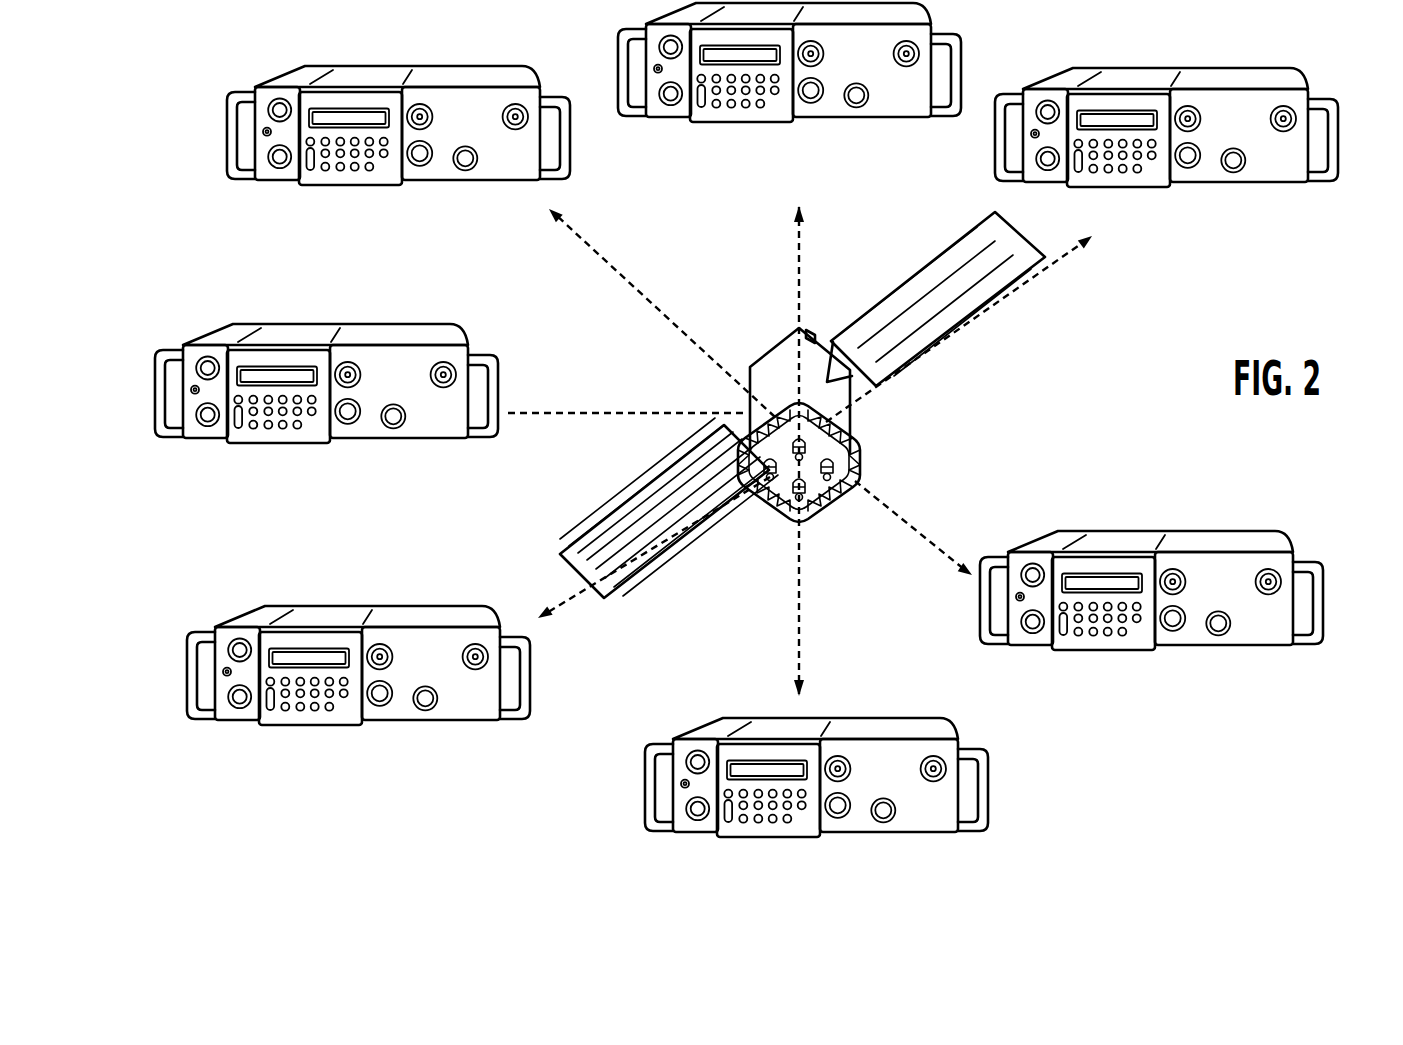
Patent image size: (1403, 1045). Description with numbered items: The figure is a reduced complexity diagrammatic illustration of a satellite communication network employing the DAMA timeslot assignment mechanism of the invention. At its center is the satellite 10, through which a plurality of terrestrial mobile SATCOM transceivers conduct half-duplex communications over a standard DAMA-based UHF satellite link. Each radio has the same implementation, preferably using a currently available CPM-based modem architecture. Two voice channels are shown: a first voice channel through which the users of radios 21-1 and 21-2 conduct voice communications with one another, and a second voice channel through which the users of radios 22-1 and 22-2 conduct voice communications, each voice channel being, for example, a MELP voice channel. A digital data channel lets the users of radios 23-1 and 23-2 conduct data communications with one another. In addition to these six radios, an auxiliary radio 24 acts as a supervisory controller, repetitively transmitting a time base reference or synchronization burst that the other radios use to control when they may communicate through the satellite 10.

The satellite 10 is at (862, 445).
The radio 21-1 is at (510, 67).
The radio 21-2 is at (1140, 530).
The radio 22-1 is at (1162, 67).
The radio 22-2 is at (413, 607).
The radio 23-1 is at (682, 115).
The radio 23-2 is at (722, 718).
The auxiliary radio 24 is at (400, 323).